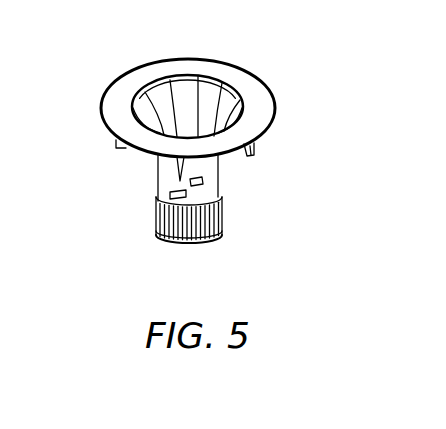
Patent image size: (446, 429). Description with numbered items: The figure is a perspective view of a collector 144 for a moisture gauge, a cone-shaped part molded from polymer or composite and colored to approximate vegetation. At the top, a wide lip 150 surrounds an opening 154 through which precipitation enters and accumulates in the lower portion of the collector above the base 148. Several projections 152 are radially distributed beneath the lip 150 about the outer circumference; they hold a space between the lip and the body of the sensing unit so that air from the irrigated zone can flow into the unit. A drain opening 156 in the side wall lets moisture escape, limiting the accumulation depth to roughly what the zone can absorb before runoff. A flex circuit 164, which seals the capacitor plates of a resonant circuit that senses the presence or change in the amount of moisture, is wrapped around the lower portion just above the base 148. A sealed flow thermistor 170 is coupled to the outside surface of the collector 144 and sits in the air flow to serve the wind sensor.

The collector 144 is at (264, 220).
The base 148 is at (200, 242).
The lip 150 is at (258, 103).
The projections 152 is at (253, 149).
The opening 154 is at (195, 87).
The opening 156 is at (203, 182).
The flex circuit 164 is at (218, 232).
The flow thermistor 170 is at (157, 200).